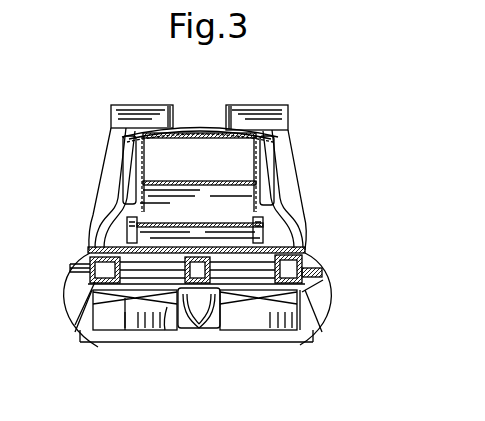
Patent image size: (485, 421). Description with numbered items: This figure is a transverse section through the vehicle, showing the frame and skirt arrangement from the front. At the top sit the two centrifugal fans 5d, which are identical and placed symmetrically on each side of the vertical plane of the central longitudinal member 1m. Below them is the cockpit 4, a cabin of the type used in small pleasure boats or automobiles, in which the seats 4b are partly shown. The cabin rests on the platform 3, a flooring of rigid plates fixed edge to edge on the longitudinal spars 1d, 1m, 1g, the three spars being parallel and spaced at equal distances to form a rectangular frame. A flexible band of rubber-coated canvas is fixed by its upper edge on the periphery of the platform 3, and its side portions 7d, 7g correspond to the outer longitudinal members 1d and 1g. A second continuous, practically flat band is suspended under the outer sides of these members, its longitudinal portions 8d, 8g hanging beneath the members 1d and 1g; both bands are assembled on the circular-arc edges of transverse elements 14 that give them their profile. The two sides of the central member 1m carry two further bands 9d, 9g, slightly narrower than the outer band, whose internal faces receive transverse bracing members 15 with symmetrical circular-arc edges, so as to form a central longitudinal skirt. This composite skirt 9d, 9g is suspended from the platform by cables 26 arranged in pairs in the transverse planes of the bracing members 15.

The longitudinal spar 1d is at (90, 268).
The longitudinal spar 1g is at (288, 268).
The central longitudinal member 1m is at (191, 267).
The platform 3 is at (234, 238).
The cockpit 4 is at (195, 122).
The seats 4b is at (167, 192).
The centrifugal fan 5d is at (128, 109).
The side portion of flexible band 7d is at (72, 310).
The side portion of flexible band 7g is at (326, 297).
The longitudinal portion of band 8d is at (78, 325).
The longitudinal portion of band 8g is at (305, 312).
The band 9d is at (183, 312).
The band 9g is at (220, 296).
The transverse element 14 is at (95, 330).
The bracing member 15 is at (178, 303).
The cable 26 is at (125, 330).